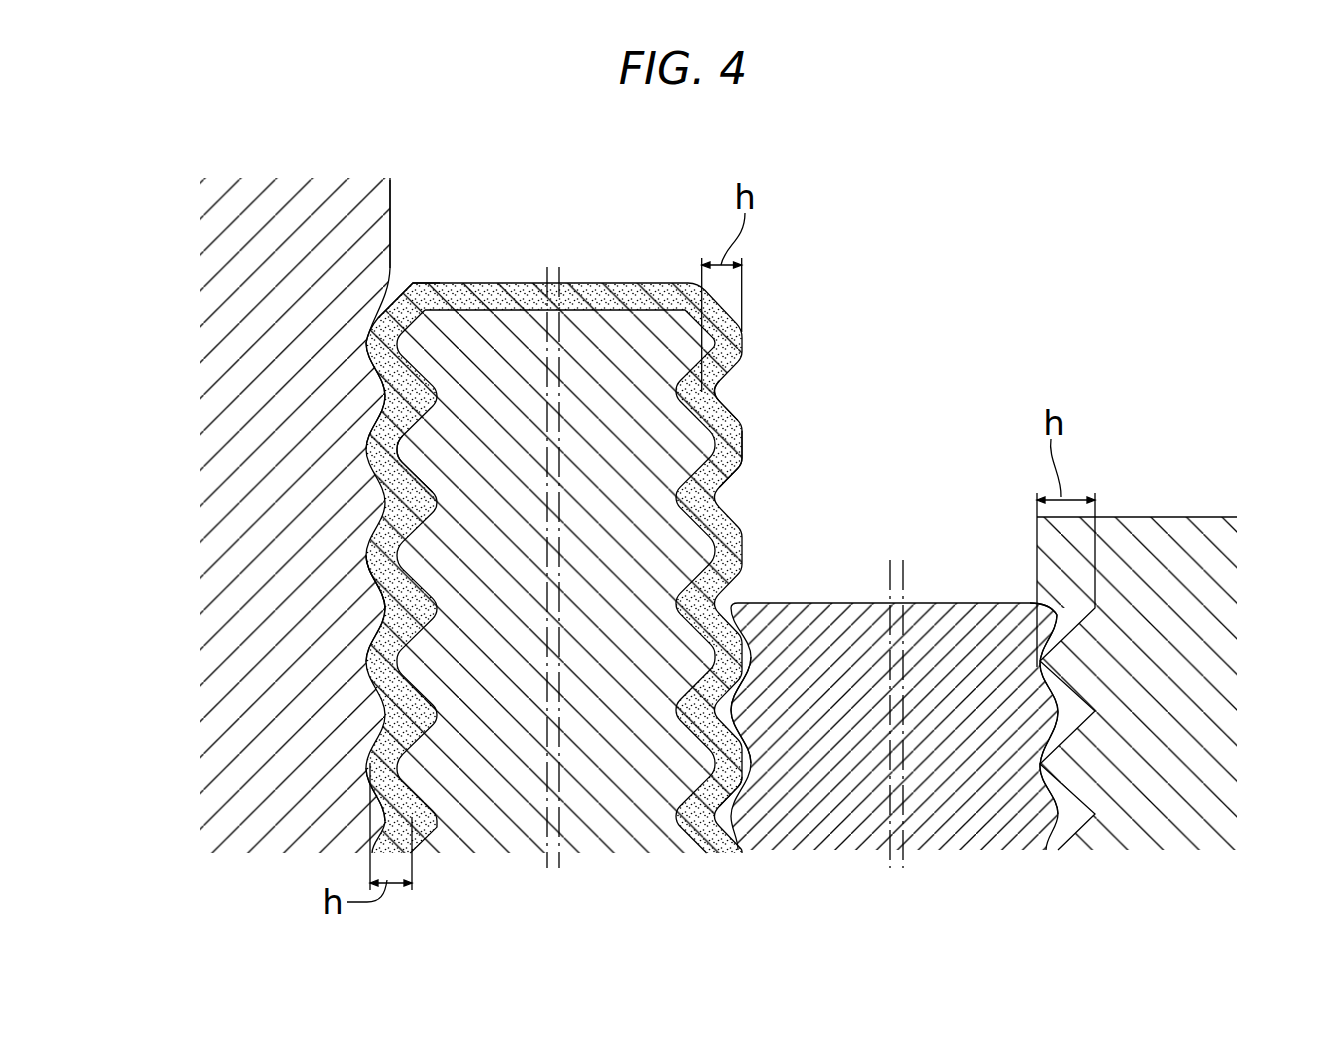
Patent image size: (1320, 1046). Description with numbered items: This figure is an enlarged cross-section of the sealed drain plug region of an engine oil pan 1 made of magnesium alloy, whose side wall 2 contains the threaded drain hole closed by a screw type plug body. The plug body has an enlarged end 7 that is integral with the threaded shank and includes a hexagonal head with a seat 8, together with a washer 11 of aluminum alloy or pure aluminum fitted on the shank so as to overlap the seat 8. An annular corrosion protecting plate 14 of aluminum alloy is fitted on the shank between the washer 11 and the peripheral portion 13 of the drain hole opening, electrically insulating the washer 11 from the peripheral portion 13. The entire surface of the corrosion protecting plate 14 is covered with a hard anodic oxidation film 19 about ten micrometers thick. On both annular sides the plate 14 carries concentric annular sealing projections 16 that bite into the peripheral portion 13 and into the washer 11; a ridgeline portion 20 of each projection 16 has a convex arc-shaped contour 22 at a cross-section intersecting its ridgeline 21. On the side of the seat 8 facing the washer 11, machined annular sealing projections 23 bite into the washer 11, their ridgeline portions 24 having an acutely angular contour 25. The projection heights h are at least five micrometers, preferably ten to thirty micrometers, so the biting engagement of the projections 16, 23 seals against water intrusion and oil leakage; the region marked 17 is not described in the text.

The oil pan 1 is at (398, 207).
The side wall 2 is at (386, 246).
The enlarged end 7 is at (1188, 511).
The seat 8 is at (1205, 720).
The washer 11 is at (922, 626).
The peripheral portion of the opening 13 is at (367, 665).
The corrosion protecting plate 14 is at (631, 278).
The annular sealing projections 16 is at (361, 346).
The thread flank 17 is at (396, 468).
The hard anodic oxidation film 19 is at (402, 309).
The ridgeline portion 20 is at (372, 535).
The ridgeline 21 is at (366, 556).
The convex arc-shaped contour 22 is at (359, 607).
The annular sealing projections 23 is at (1037, 667).
The ridgeline portions 24 is at (1040, 643).
The acutely angular contour 25 is at (1044, 790).